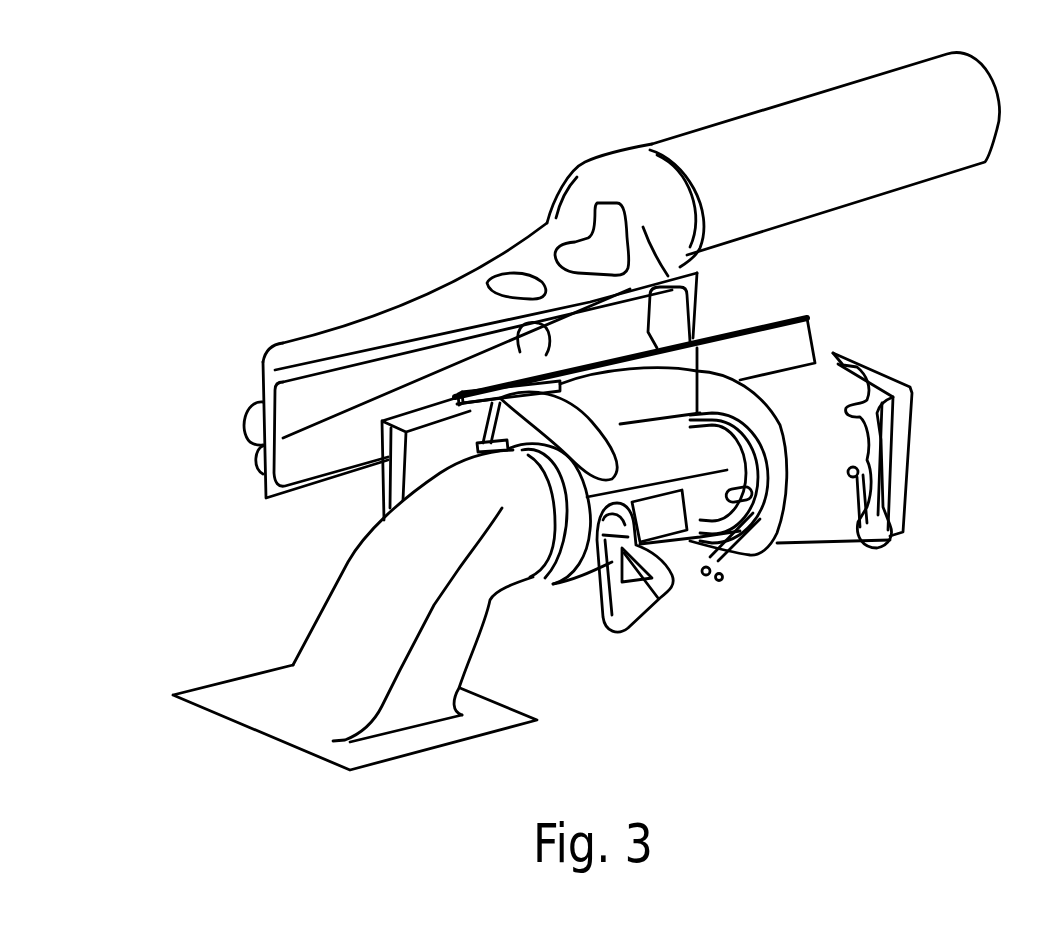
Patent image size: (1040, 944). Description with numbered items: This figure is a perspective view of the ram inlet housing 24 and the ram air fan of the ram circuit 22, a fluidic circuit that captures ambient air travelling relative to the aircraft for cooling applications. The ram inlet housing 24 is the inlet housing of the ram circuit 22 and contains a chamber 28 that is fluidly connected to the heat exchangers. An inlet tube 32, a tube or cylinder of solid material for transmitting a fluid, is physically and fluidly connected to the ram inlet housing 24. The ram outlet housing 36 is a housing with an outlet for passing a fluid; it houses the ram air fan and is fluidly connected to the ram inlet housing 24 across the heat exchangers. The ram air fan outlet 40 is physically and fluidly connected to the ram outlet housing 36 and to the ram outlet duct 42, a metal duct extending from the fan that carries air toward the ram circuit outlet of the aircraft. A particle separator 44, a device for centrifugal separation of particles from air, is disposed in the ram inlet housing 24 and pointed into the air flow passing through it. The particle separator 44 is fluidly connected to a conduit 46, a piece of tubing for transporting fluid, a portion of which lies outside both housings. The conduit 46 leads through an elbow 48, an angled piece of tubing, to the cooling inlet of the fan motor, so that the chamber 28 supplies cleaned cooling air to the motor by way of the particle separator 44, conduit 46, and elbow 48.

The ram circuit 22 is at (396, 150).
The ram inlet housing 24 is at (518, 241).
The chamber 28 is at (613, 322).
The inlet tube 32 is at (703, 127).
The ram outlet housing 36 is at (815, 407).
The ram air fan outlet 40 is at (570, 535).
The ram outlet duct 42 is at (325, 598).
The particle separator 44 is at (543, 323).
The conduit 46 is at (505, 362).
The elbow 48 is at (627, 547).